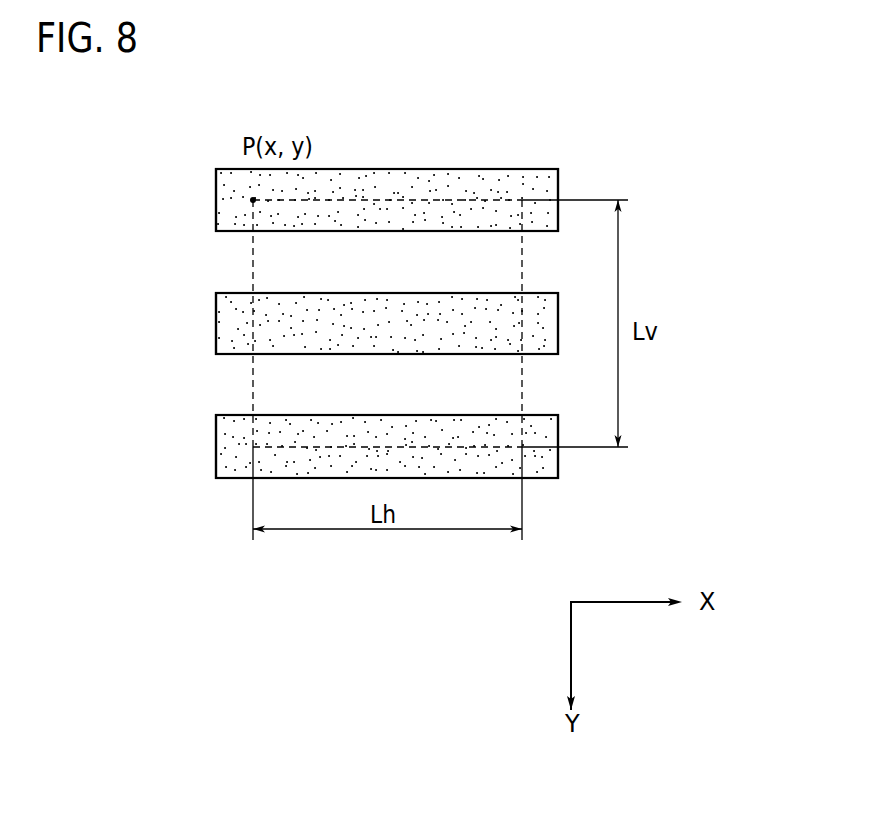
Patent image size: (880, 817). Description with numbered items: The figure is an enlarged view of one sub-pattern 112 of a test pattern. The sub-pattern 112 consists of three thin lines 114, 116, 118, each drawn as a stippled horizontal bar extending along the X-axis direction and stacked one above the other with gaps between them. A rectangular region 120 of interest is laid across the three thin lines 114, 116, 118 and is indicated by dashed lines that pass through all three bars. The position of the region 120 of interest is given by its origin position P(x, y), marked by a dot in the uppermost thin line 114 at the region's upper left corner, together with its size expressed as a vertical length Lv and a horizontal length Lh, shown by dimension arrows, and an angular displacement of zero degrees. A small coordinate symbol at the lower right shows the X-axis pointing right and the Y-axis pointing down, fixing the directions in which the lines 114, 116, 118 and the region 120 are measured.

The sub-pattern 112 is at (537, 117).
The thin line 114 is at (228, 203).
The thin line 116 is at (228, 327).
The thin line 118 is at (228, 449).
The rectangular region of interest 120 is at (272, 256).